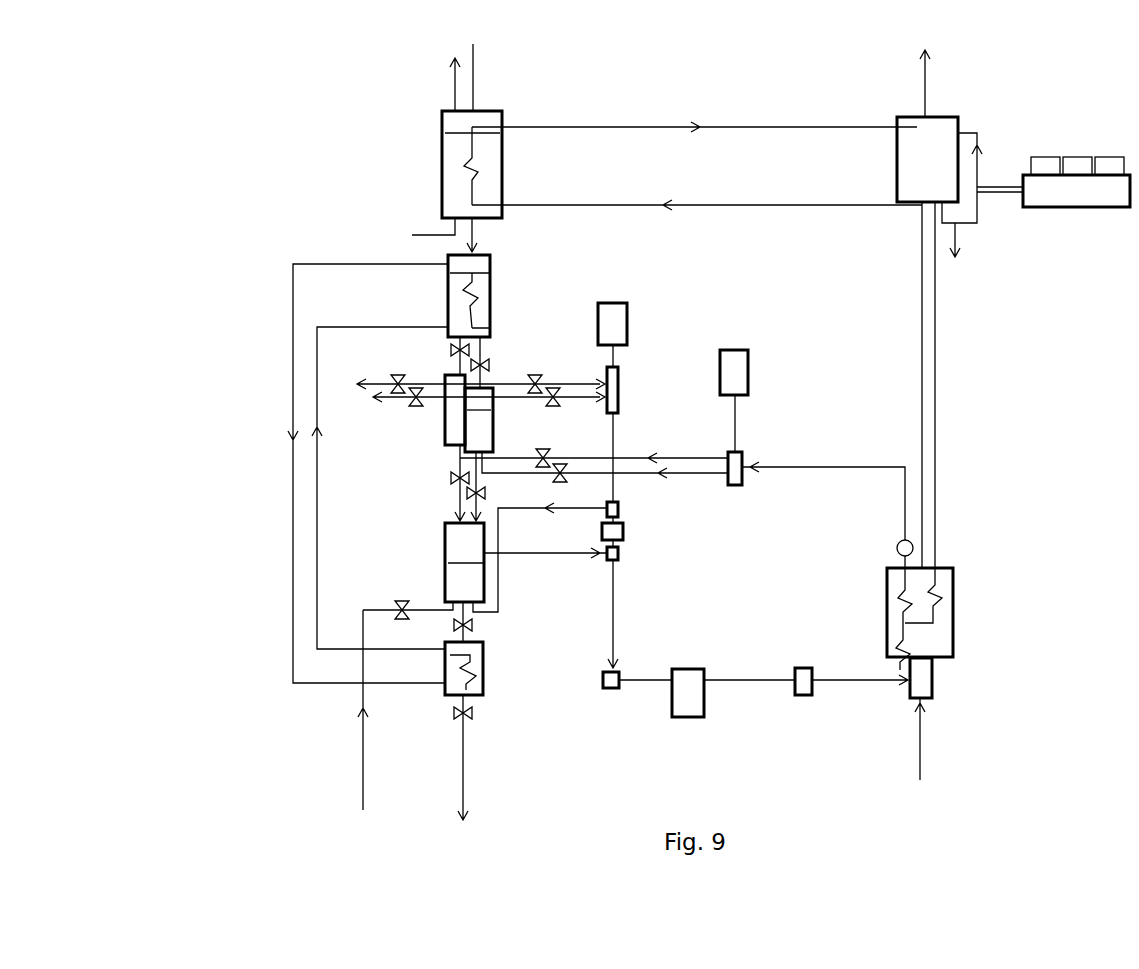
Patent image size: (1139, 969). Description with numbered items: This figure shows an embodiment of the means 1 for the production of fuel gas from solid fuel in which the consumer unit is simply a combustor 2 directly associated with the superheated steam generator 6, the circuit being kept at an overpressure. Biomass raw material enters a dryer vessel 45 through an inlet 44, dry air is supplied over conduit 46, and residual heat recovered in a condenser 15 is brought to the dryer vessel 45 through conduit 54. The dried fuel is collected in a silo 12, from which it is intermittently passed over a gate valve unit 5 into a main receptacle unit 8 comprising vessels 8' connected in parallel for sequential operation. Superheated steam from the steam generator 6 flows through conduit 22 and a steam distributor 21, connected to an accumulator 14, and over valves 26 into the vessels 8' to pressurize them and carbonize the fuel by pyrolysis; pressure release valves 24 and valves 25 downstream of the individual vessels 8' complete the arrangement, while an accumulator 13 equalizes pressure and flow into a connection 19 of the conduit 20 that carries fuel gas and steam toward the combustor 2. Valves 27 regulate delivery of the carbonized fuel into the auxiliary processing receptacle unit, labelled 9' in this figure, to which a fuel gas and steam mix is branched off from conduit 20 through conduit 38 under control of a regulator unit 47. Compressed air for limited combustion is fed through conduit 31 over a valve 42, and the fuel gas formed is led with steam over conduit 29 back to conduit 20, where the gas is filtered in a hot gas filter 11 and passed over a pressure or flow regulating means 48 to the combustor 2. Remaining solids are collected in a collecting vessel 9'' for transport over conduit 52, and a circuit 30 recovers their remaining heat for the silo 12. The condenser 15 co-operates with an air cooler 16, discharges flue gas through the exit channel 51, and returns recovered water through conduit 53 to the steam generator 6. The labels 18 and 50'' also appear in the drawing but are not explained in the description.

The means for the production of fuel gas from solid fuel 1 is at (264, 472).
The combustor 2 is at (935, 676).
The gate valve unit 5 is at (500, 355).
The steam generator 6 is at (956, 600).
The main receptacle unit 8 is at (509, 420).
The vessels 8' is at (438, 410).
The vessel 9' is at (447, 582).
The collecting vessel 9'' is at (489, 668).
The hot gas filter 11 is at (690, 668).
The silo 12 is at (492, 302).
The accumulator 13 is at (612, 301).
The accumulator 14 is at (737, 348).
The condenser 15 is at (945, 120).
The air cooler 16 is at (1083, 209).
The valve unit 18 is at (602, 683).
The connection 19 is at (620, 403).
The conduit 20 is at (618, 449).
The steam distributor 21 is at (745, 456).
The conduit 22 is at (821, 466).
The pressure release valves 24 is at (399, 381).
The valves 25 is at (554, 393).
The valves 26 is at (556, 474).
The valves 27 is at (455, 480).
The conduit 29 is at (578, 557).
The circuit 30 is at (330, 690).
The conduit for air feed 31 is at (357, 763).
The conduit 38 is at (500, 583).
The valve 42 is at (350, 604).
The inlet 44 is at (478, 96).
The dryer vessel 45 is at (440, 172).
The conduit 46 is at (450, 97).
The regulator unit 47 is at (625, 531).
The pressure or flow regulating means 48 is at (805, 667).
The feed line 50'' is at (958, 739).
The flue gas exit channel 51 is at (932, 76).
The conduit 52 is at (460, 751).
The conduit 53 is at (938, 476).
The conduit 54 is at (750, 204).